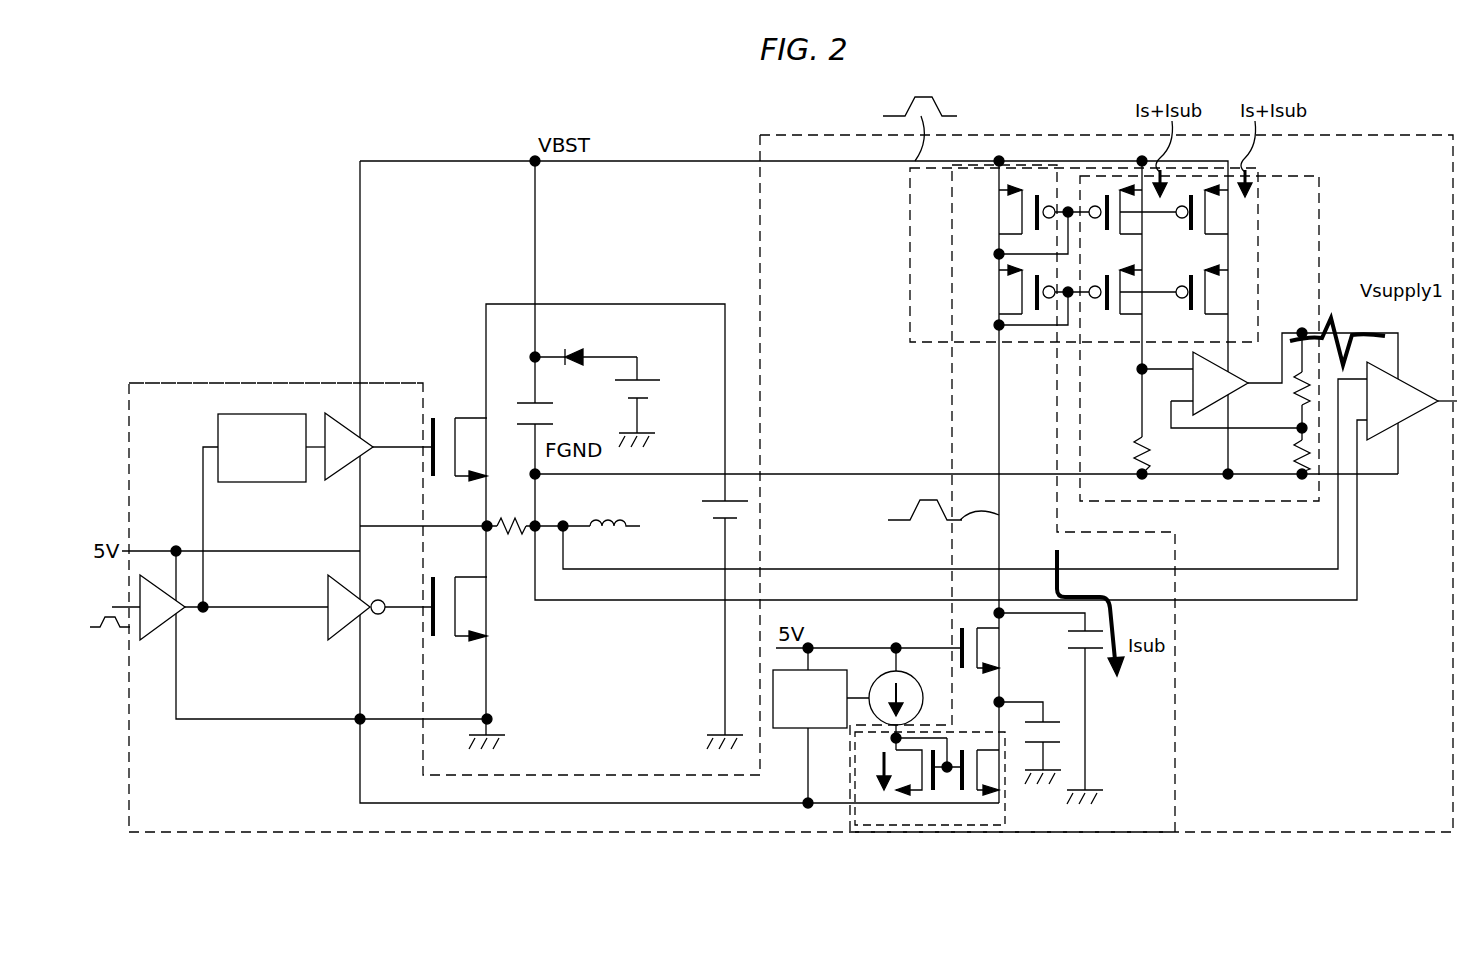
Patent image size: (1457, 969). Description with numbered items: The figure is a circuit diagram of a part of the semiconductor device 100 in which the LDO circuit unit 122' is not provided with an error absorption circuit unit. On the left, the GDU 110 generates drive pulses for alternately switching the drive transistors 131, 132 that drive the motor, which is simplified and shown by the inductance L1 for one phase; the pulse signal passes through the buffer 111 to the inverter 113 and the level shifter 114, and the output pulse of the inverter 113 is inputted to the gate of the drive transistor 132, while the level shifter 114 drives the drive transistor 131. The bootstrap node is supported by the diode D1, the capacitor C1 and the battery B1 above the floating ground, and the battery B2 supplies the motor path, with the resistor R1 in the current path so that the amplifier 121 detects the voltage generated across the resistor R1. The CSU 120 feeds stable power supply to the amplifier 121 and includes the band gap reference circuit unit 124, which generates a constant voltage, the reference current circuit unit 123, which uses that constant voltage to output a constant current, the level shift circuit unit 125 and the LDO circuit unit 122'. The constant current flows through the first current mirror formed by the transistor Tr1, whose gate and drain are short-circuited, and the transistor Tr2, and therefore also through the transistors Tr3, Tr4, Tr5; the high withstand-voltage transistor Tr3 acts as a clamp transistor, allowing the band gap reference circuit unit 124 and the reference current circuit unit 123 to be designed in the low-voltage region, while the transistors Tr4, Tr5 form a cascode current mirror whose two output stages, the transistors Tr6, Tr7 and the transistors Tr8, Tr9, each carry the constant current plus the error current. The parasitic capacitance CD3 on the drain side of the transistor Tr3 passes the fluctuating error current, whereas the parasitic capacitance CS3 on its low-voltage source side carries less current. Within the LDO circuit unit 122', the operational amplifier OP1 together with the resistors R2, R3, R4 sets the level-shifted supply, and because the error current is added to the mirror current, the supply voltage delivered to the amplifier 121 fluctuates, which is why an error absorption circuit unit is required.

The power supply device 100 is at (1381, 133).
The GDU 110 is at (452, 832).
The buffer 111 is at (165, 628).
The inverter 113 is at (328, 632).
The level shifter 114 is at (250, 414).
The CSU 120 is at (700, 832).
The amplifier 121 is at (1400, 380).
The LDO circuit unit 122' is at (1244, 338).
The IREF circuit unit 123 is at (875, 675).
The BGR circuit unit 124 is at (788, 728).
The level shift circuit unit 125 is at (1175, 697).
The drive transistor 131 is at (448, 418).
The drive transistor 132 is at (445, 640).
The resistor R1 is at (512, 518).
The resistor R2 is at (1150, 440).
The resistor R3 is at (1302, 402).
The resistor R4 is at (1296, 450).
The inductance L1 is at (627, 515).
The capacitor C1 is at (553, 412).
The diode D1 is at (578, 348).
The battery B1 is at (655, 372).
The battery B2 is at (748, 508).
The operational amplifier OP1 is at (1250, 368).
The transistor Tr1 is at (930, 795).
The transistor Tr2 is at (1000, 795).
The transistor Tr3 is at (1005, 655).
The transistor Tr4 is at (992, 217).
The transistor Tr5 is at (992, 297).
The transistor Tr6 is at (1130, 222).
The transistor Tr7 is at (1130, 302).
The transistor Tr8 is at (1232, 217).
The transistor Tr9 is at (1232, 297).
The parasitic capacitance CS3 is at (1050, 710).
The parasitic capacitance CD3 is at (1095, 652).